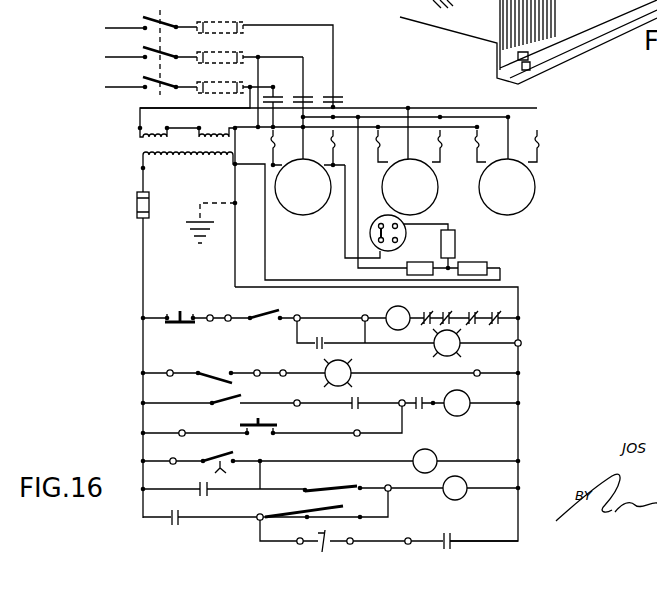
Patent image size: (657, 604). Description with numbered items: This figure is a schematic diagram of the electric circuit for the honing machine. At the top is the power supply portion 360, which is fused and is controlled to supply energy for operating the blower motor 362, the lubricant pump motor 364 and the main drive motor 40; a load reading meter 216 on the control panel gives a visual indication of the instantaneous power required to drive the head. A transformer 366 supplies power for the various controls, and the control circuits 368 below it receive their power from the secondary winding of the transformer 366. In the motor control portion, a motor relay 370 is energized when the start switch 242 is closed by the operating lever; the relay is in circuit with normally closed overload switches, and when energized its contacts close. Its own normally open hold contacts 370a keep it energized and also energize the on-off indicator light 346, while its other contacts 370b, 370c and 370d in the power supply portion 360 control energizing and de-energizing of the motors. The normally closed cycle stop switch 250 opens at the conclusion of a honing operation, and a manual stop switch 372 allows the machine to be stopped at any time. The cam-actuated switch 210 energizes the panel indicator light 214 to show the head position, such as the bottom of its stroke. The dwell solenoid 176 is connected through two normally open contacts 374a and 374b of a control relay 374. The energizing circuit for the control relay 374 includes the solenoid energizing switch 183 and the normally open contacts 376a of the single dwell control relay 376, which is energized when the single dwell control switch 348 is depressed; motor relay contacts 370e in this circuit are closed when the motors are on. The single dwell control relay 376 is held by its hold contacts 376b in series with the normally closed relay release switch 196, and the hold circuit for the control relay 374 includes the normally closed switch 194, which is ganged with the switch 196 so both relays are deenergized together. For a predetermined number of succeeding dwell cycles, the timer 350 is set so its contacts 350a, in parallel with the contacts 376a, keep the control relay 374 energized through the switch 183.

The power supply portion 360 is at (90, 67).
The transformer 366 is at (128, 153).
The motor relay contacts 370b is at (276, 92).
The motor relay contacts 370c is at (310, 88).
The motor relay contacts 370d is at (340, 96).
The main drive motor 40 is at (305, 216).
The lubricant pump motor 364 is at (435, 210).
The blower motor 362 is at (534, 197).
The load reading meter 216 is at (374, 238).
The control circuits 368 is at (522, 373).
The manual stop switch 372 is at (178, 312).
The cycle stop switch 250 is at (268, 313).
The start switch 242 is at (335, 314).
The motor relay 370 is at (415, 307).
The hold contacts 370a is at (314, 348).
The on-off indicator light 346 is at (449, 356).
The switch 210 is at (212, 369).
The panel indicator light 214 is at (352, 371).
The relay release switch 196 is at (238, 399).
The hold contacts 376b is at (350, 410).
The motor relay contacts 370e is at (425, 396).
The single dwell control relay 376 is at (463, 415).
The single dwell control switch 348 is at (273, 436).
The timer contacts 350a is at (202, 458).
The timer 350 is at (432, 449).
The relay contacts 376a is at (200, 489).
The solenoid energizing switch 183 is at (308, 489).
The control relay 374 is at (452, 498).
The relay contacts 374a is at (184, 516).
The switch 194 is at (258, 520).
The dwell solenoid 176 is at (293, 553).
The relay contacts 374b is at (450, 535).